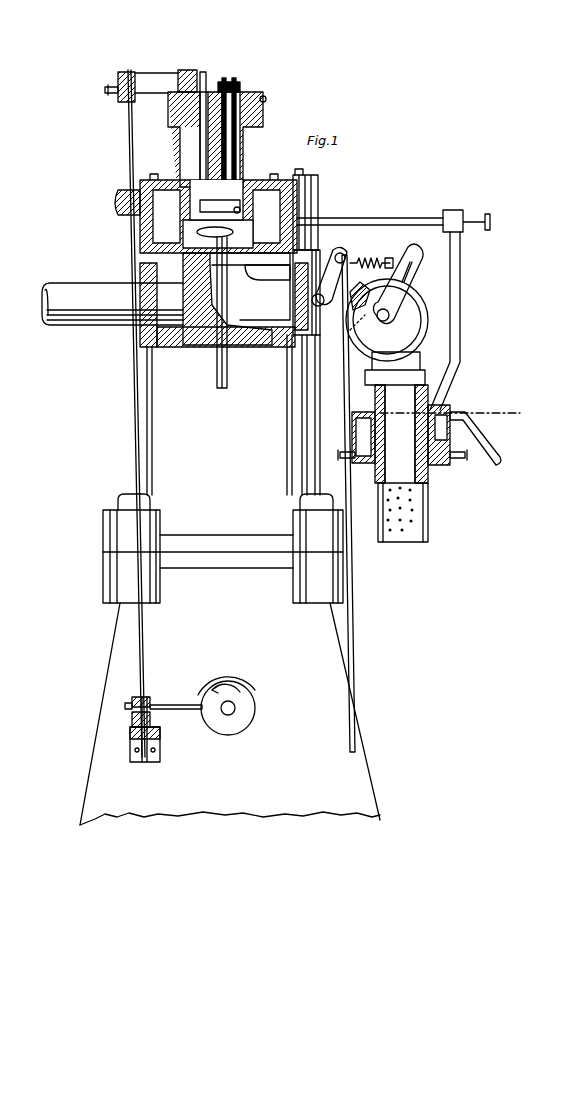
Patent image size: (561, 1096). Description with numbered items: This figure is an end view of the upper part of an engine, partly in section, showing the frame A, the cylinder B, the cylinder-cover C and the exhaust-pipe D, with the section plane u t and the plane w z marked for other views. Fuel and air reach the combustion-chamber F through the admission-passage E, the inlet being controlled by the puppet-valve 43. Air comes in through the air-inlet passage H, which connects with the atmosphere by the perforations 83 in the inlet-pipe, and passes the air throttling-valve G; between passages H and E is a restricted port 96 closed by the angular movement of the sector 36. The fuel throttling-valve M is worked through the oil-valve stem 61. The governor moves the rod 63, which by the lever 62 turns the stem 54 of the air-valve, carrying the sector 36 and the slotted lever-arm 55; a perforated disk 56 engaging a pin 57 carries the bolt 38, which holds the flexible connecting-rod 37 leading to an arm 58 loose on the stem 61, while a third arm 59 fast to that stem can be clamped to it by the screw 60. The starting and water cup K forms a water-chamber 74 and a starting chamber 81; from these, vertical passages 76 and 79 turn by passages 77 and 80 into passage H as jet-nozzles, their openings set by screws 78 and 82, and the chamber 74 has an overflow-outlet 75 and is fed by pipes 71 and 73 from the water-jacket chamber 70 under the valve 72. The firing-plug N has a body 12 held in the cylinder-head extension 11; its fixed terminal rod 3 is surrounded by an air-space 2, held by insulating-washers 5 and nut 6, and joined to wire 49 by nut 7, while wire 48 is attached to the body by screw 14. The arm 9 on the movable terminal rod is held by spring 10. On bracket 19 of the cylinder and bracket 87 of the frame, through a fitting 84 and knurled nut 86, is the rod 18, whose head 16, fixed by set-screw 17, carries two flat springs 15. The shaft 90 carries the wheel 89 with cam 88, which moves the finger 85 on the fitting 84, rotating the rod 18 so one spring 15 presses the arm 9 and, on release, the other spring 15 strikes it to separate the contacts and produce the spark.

The frame A is at (230, 659).
The cylinder B is at (233, 415).
The cylinder-cover C is at (262, 180).
The exhaust-pipe D is at (112, 314).
The admission-passage E is at (217, 300).
The combustion-chamber F is at (200, 224).
The air throttling-valve G is at (387, 332).
The air-inlet passage H is at (401, 434).
The starting and water cup K is at (444, 435).
The fuel throttling-valve M is at (318, 320).
The firing-plug N is at (165, 106).
The section plane line t is at (321, 377).
The section plane line u is at (319, 241).
The section plane line w is at (336, 412).
The section plane line z is at (454, 412).
The air-space 2 is at (269, 149).
The terminal rod 3 is at (278, 162).
The insulating-washers 5 is at (252, 102).
The nut 6 is at (203, 70).
The nut 7 is at (233, 77).
The arm 9 is at (188, 68).
The spring 10 is at (148, 99).
The cylinder-head extension 11 is at (216, 148).
The body 12 is at (178, 142).
The screw 14 is at (278, 101).
The flat springs 15 is at (156, 83).
The head 16 is at (116, 76).
The set-screw 17 is at (104, 90).
The rod 18 is at (145, 630).
The bracket 19 is at (115, 228).
The sector 36 is at (362, 296).
The connecting-rod 37 is at (371, 255).
The bolt 38 is at (412, 256).
The puppet-valve 43 is at (228, 356).
The wire 48 is at (262, 95).
The wire 49 is at (245, 92).
The stem 54 is at (390, 314).
The lever-arm 55 is at (396, 290).
The perforated disk 56 is at (418, 270).
The pin 57 is at (418, 262).
The arm 58 is at (340, 248).
The arm 59 is at (288, 298).
The screw 60 is at (340, 290).
The oil-valve stem 61 is at (292, 310).
The lever 62 is at (364, 329).
The rod 63 is at (355, 612).
The water-jacket chamber 70 is at (213, 201).
The pipe 71 is at (370, 214).
The valve 72 is at (462, 212).
The pipe 73 is at (462, 300).
The water-chamber 74 is at (487, 450).
The overflow-outlet 75 is at (480, 432).
The vertical passage 76 is at (435, 465).
The passage 77 is at (428, 395).
The screw 78 is at (464, 463).
The vertical passage 79 is at (365, 470).
The passage 80 is at (365, 410).
The chamber 81 is at (355, 436).
The screw 82 is at (338, 458).
The perforations 83 is at (395, 533).
The fitting 84 is at (148, 696).
The finger 85 is at (176, 698).
The knurled nut 86 is at (152, 720).
The bracket 87 is at (162, 740).
The cam 88 is at (237, 684).
The wheel 89 is at (258, 708).
The shaft 90 is at (236, 710).
The port 96 is at (422, 290).